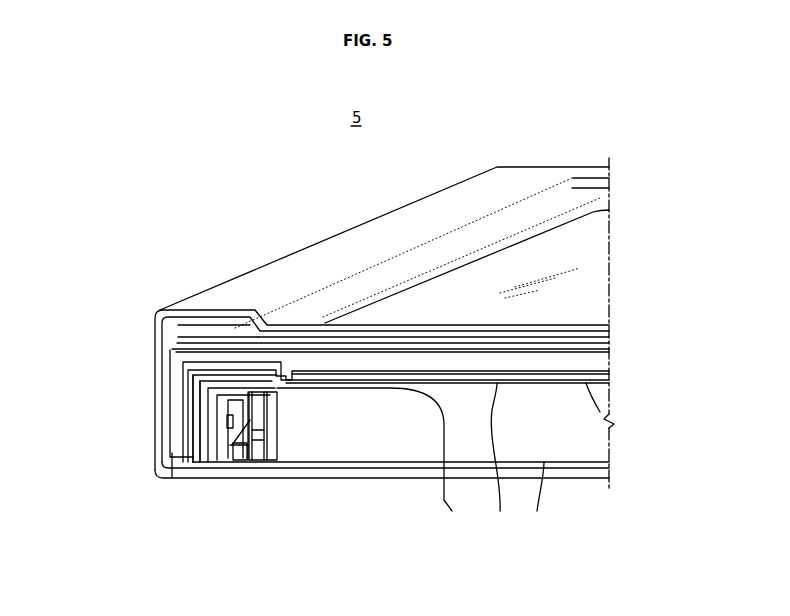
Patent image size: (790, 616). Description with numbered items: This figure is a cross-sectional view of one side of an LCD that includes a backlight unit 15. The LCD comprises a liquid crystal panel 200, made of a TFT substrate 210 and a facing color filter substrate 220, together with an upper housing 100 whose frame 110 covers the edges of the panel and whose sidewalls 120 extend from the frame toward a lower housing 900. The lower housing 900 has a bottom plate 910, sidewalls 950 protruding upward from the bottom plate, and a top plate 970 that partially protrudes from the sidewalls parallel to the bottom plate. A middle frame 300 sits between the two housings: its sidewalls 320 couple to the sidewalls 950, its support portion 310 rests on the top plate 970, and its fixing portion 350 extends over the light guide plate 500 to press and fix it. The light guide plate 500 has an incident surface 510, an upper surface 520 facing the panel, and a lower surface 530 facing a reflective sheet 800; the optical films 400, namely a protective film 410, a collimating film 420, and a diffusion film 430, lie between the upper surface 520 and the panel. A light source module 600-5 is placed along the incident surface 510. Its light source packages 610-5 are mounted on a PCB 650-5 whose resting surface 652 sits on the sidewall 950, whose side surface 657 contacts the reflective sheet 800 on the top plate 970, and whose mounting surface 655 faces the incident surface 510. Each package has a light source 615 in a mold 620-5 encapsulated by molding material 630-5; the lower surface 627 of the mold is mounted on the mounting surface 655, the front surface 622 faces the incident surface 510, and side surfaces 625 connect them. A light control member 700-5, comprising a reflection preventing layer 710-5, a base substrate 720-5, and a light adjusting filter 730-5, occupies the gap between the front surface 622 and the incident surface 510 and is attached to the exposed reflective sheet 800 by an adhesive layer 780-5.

The backlight unit 15 is at (706, 365).
The upper housing 100 is at (126, 263).
The frame 110 is at (176, 311).
The sidewalls 120 is at (156, 322).
The liquid crystal panel 200 is at (660, 326).
The TFT substrate 210 is at (610, 340).
The color filter substrate 220 is at (610, 330).
The middle frame 300 is at (107, 327).
The support portion 310 is at (200, 357).
The sidewalls 320 is at (176, 379).
The fixing portion 350 is at (204, 356).
The optical films 400 is at (660, 378).
The protective film 410 is at (610, 370).
The collimating film 420 is at (598, 377).
The diffusion film 430 is at (588, 382).
The light guide plate 500 is at (463, 531).
The incident surface 510 is at (375, 460).
The upper surface 520 is at (500, 458).
The lower surface 530 is at (539, 497).
The light source module 600-5 is at (187, 553).
The light source packages 610-5 is at (98, 458).
The light source 615 is at (220, 427).
The mold 620-5 is at (117, 388).
The front surface 622 is at (215, 397).
The side surfaces 625 is at (226, 424).
The lower surface 627 is at (190, 392).
The molding material 630-5 is at (225, 434).
The PCB 650-5 is at (177, 532).
The resting surface 652 is at (187, 456).
The mounting surface 655 is at (233, 455).
The side surface 657 is at (210, 460).
The light control member 700-5 is at (357, 408).
The reflection preventing layer 710-5 is at (281, 423).
The base substrate 720-5 is at (271, 399).
The light adjusting filter 730-5 is at (257, 433).
The adhesive layer 780-5 is at (282, 460).
The reflective sheet 800 is at (610, 465).
The lower housing 900 is at (215, 237).
The bottom plate 910 is at (252, 423).
The sidewalls 950 is at (195, 355).
The top plate 970 is at (223, 368).